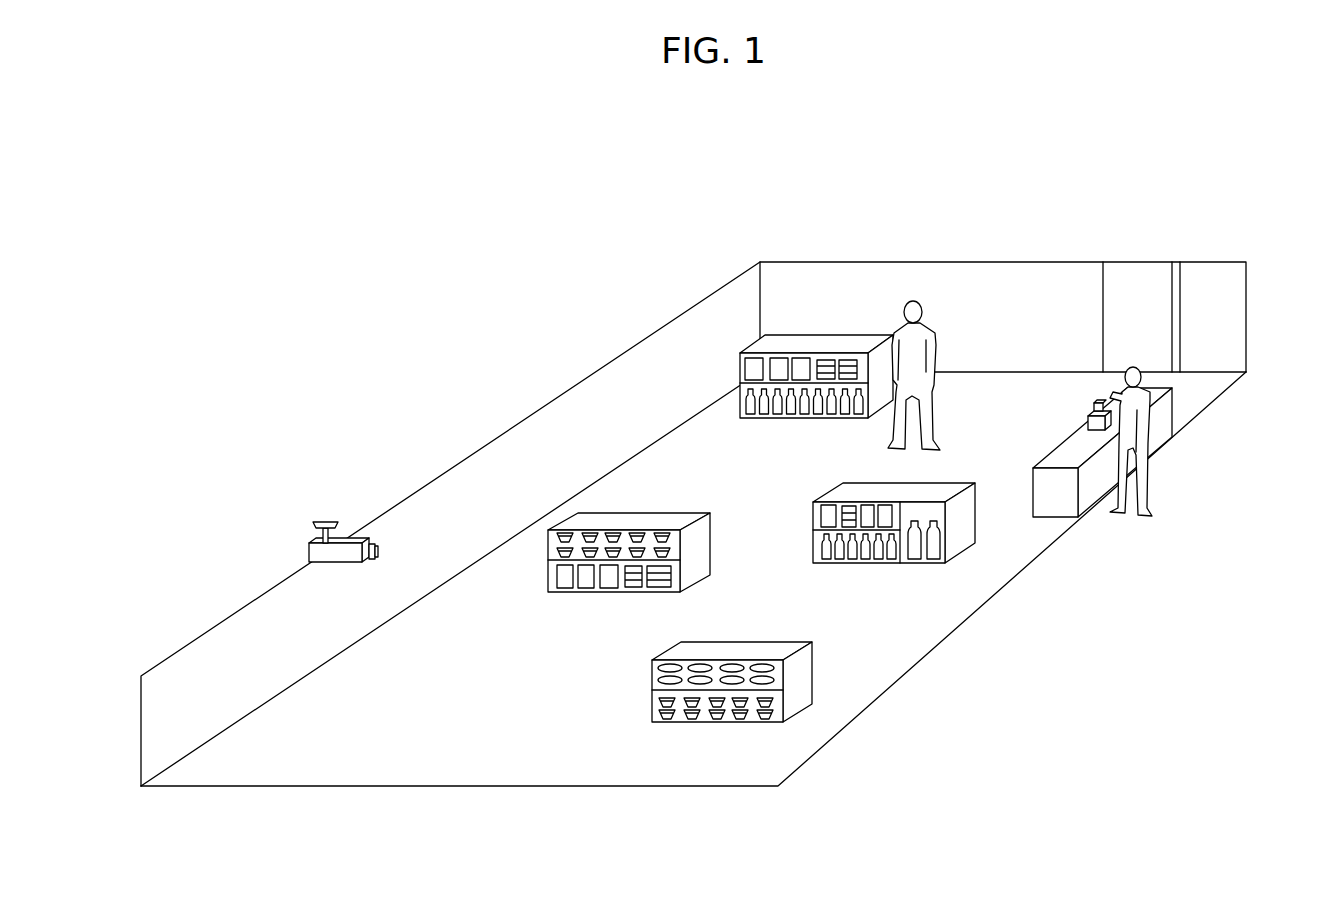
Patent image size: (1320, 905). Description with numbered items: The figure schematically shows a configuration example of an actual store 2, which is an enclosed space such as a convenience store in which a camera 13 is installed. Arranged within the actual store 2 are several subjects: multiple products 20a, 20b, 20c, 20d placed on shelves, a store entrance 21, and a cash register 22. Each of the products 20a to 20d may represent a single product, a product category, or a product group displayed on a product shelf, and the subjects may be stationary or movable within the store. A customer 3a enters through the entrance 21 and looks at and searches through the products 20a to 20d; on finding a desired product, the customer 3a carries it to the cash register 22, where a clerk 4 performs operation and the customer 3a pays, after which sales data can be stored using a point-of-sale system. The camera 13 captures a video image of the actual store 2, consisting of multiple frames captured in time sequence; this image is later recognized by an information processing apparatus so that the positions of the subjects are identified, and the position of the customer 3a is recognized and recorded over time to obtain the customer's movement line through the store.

The actual store 2 is at (971, 172).
The customer 3a is at (913, 300).
The clerk 4 is at (1142, 518).
The camera 13 is at (320, 520).
The product 20a is at (787, 420).
The product 20b is at (855, 565).
The product 20c is at (592, 595).
The product 20d is at (705, 725).
The store entrance 21 is at (1140, 262).
The cash register 22 is at (1158, 452).